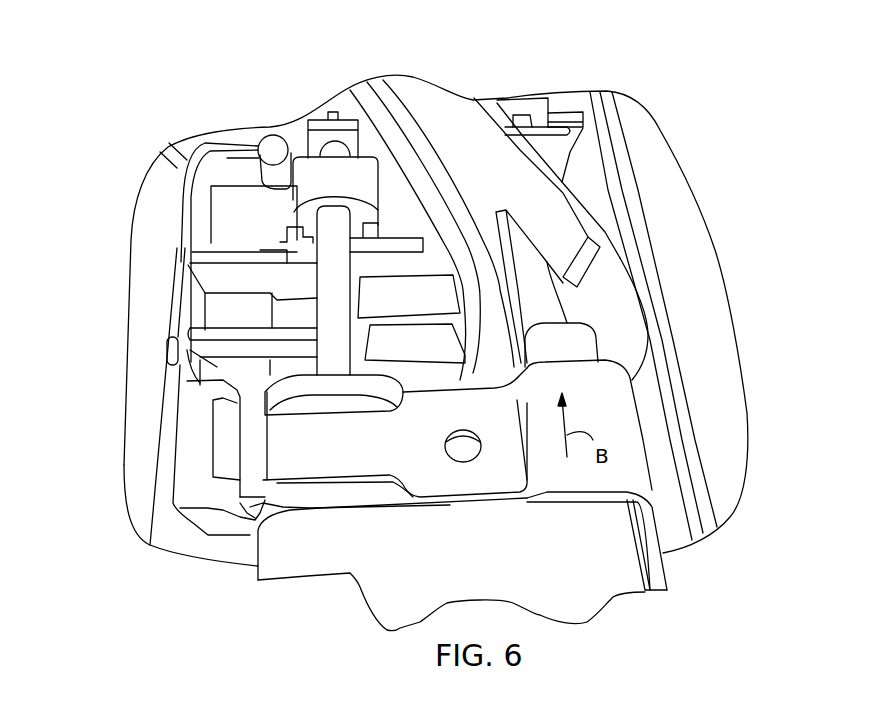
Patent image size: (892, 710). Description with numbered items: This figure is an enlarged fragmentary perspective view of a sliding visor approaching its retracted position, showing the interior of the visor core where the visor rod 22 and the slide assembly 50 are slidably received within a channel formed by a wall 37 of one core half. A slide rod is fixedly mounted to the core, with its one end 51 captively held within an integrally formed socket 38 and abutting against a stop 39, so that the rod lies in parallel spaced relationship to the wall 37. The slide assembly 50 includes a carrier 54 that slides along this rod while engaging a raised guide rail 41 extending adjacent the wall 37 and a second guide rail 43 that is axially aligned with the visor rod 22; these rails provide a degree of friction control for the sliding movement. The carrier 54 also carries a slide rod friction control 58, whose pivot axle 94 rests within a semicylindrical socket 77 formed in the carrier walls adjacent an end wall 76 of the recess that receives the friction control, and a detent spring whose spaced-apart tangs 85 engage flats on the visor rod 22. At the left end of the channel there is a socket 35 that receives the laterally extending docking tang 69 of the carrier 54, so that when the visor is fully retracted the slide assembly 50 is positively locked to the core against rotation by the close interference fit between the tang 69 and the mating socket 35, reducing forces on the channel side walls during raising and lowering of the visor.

The visor rod 22 is at (570, 330).
The socket 35 is at (402, 332).
The wall 37 is at (178, 283).
The socket 38 is at (360, 177).
The stop 39 is at (333, 140).
The guide rail 41 is at (213, 362).
The second guide rail 43 is at (543, 275).
The slide assembly 50 is at (630, 355).
The end 51 is at (330, 126).
The carrier 54 is at (657, 455).
The slide rod friction control 58 is at (232, 422).
The tang 69 is at (443, 372).
The end wall 76 is at (175, 475).
The semicylindrical socket 77 is at (287, 507).
The tangs 85 is at (630, 550).
The pivot axle 94 is at (250, 490).